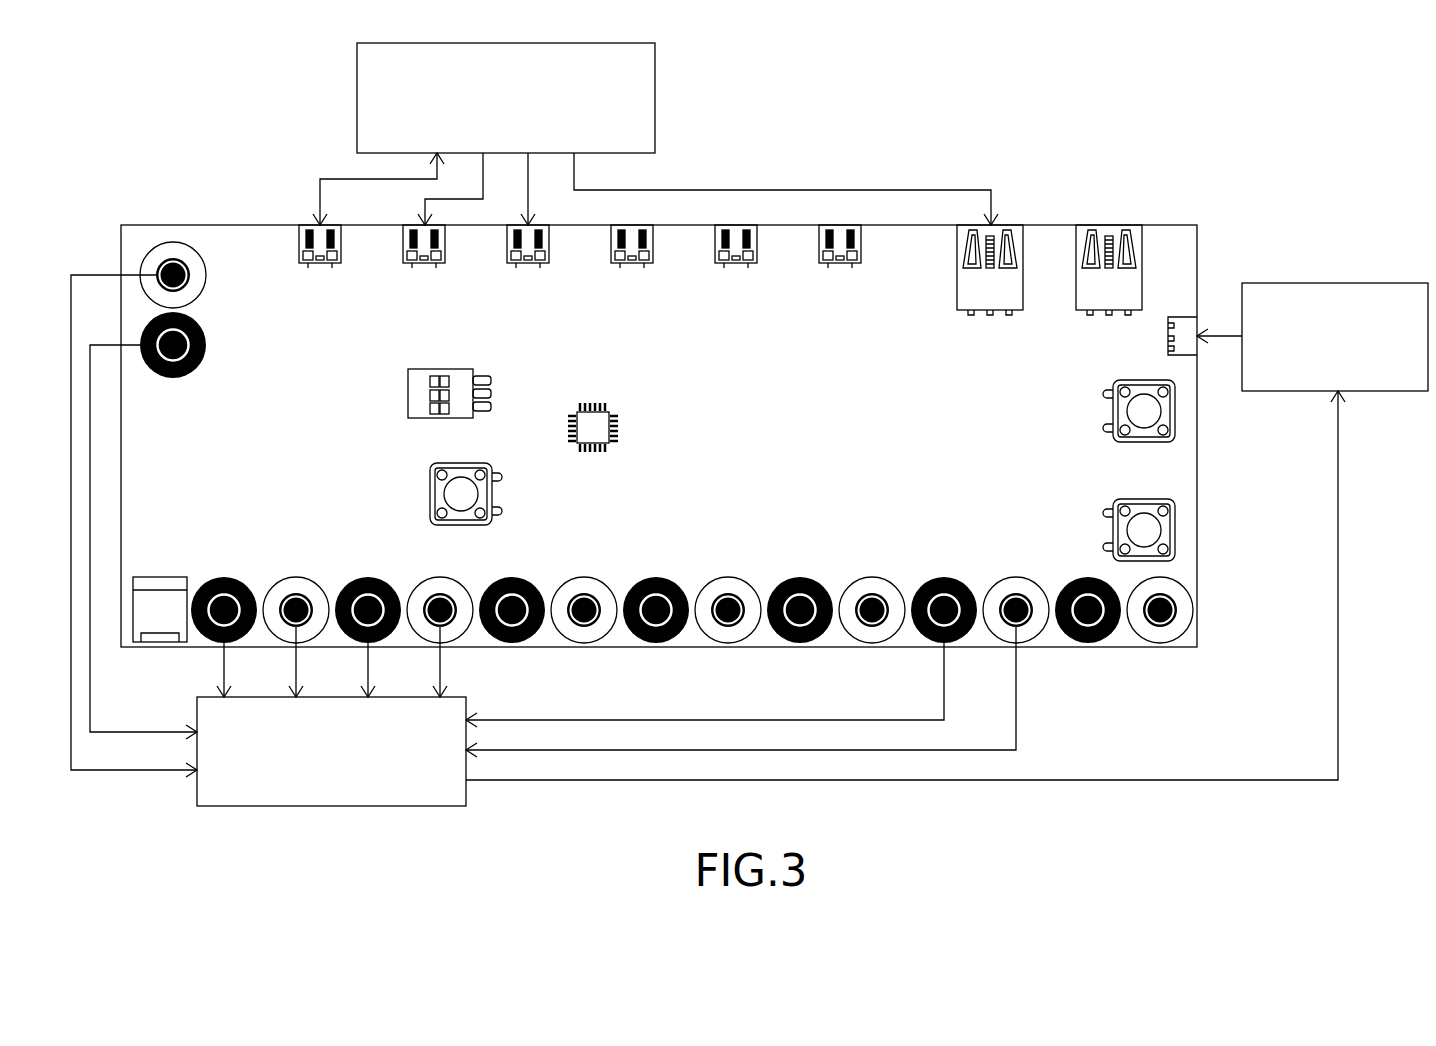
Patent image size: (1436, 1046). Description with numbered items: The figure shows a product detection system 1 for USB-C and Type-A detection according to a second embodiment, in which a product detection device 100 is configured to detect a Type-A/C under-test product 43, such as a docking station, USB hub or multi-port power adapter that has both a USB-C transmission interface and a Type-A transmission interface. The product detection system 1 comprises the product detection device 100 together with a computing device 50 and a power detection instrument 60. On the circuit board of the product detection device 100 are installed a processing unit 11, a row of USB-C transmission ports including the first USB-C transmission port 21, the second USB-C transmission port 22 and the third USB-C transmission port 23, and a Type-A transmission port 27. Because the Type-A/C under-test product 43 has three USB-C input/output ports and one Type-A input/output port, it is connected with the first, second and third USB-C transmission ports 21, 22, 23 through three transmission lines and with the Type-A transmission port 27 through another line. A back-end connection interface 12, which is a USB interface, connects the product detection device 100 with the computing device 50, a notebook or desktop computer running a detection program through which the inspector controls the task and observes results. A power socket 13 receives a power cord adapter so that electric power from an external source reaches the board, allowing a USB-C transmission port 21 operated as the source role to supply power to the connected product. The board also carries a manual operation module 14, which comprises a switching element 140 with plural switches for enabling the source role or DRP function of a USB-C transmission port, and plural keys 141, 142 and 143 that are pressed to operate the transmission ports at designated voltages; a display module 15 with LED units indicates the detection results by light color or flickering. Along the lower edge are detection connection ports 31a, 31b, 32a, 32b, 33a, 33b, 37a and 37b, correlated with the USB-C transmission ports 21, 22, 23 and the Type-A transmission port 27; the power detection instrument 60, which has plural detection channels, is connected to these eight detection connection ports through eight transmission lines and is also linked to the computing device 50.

The product detection system 1 is at (1251, 115).
The product detection device 100 is at (1170, 224).
The Type-A/C under-test product 43 is at (598, 52).
The computing device 50 is at (1362, 292).
The power detection instrument 60 is at (268, 797).
The first USB-C transmission port 21 is at (341, 243).
The second USB-C transmission port 22 is at (445, 243).
The third USB-C transmission port 23 is at (548, 243).
The Type-A transmission port 27 is at (1018, 228).
The back-end connection interface 12 is at (1190, 345).
The processing unit 11 is at (597, 418).
The manual operation module 14 is at (415, 372).
The switching element 140 is at (379, 372).
The display module 15 is at (485, 382).
The key 141 is at (458, 472).
The key 142 is at (1147, 390).
The key 143 is at (1147, 512).
The power socket 13 is at (160, 590).
The detection connection port 31a is at (205, 358).
The detection connection port 31b is at (200, 280).
The detection connection port 32a is at (235, 578).
The detection connection port 32b is at (313, 590).
The detection connection port 33a is at (393, 590).
The detection connection port 33b is at (470, 592).
The detection connection port 37a is at (928, 578).
The detection connection port 37b is at (1013, 585).